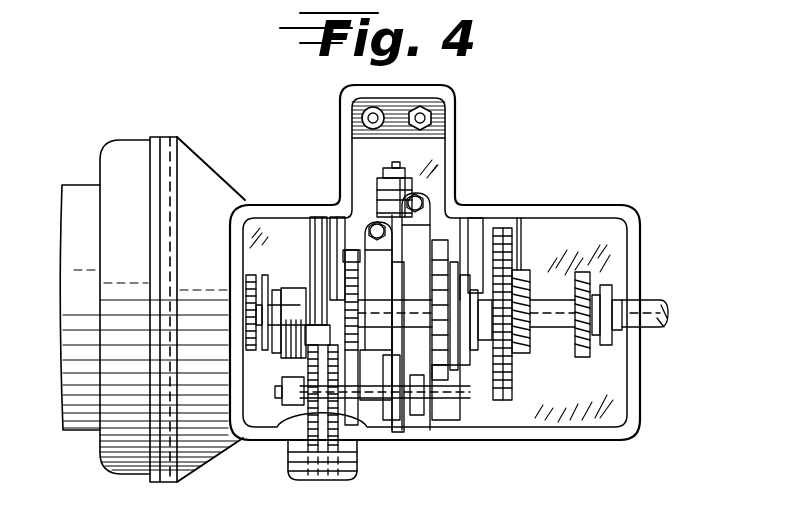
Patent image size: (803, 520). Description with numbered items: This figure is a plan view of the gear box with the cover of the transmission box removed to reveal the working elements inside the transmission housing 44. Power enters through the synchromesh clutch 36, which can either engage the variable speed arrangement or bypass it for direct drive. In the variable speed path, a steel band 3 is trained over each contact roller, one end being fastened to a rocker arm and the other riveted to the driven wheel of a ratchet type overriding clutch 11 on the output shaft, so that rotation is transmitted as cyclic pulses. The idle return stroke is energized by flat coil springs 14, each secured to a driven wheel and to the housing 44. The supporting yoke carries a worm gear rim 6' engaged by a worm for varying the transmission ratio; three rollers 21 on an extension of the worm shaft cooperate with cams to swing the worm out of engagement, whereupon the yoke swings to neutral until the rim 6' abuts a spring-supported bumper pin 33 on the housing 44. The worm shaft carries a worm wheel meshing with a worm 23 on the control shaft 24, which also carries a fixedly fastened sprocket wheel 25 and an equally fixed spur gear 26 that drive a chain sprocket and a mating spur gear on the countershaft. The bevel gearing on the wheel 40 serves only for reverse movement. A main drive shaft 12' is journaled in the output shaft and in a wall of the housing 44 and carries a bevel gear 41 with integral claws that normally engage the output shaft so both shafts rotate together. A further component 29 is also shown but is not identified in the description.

The steel band 3 is at (370, 266).
The worm gear rim 6' is at (385, 414).
The ratchet type overriding clutch 11 is at (405, 335).
The main drive shaft 12' is at (612, 298).
The flat coil spring 14 is at (347, 288).
The roller 21 is at (378, 210).
The worm 23 is at (418, 405).
The control shaft 24 is at (283, 394).
The sprocket wheel 25 is at (338, 420).
The spur gear 26 is at (308, 420).
The clutch 29 is at (290, 358).
The bumper pin 33 is at (362, 118).
The synchromesh clutch 36 is at (258, 300).
The wheel 40 is at (503, 232).
The bevel gear 41 is at (581, 357).
The transmission housing 44 is at (640, 394).